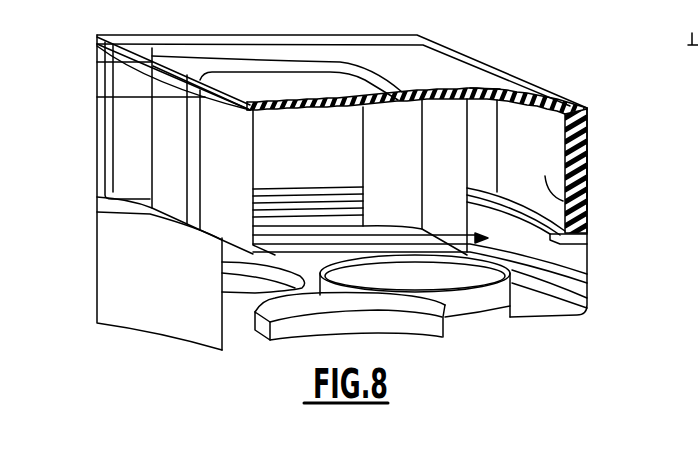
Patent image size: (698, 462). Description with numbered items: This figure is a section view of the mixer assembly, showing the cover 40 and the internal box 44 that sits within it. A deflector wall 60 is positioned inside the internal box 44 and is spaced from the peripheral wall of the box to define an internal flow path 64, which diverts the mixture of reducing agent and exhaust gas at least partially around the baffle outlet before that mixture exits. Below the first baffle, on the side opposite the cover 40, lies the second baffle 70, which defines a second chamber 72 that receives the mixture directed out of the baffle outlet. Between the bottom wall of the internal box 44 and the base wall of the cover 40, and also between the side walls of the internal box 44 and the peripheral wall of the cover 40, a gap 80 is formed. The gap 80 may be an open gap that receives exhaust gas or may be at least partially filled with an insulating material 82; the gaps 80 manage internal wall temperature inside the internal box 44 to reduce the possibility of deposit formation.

The cover 40 is at (497, 77).
The internal box 44 is at (565, 206).
The deflector wall 60 is at (447, 140).
The internal flow path 64 is at (509, 216).
The second baffle 70 is at (547, 318).
The second chamber 72 is at (508, 322).
The gap 80 is at (466, 74).
The insulating material 82 is at (333, 101).